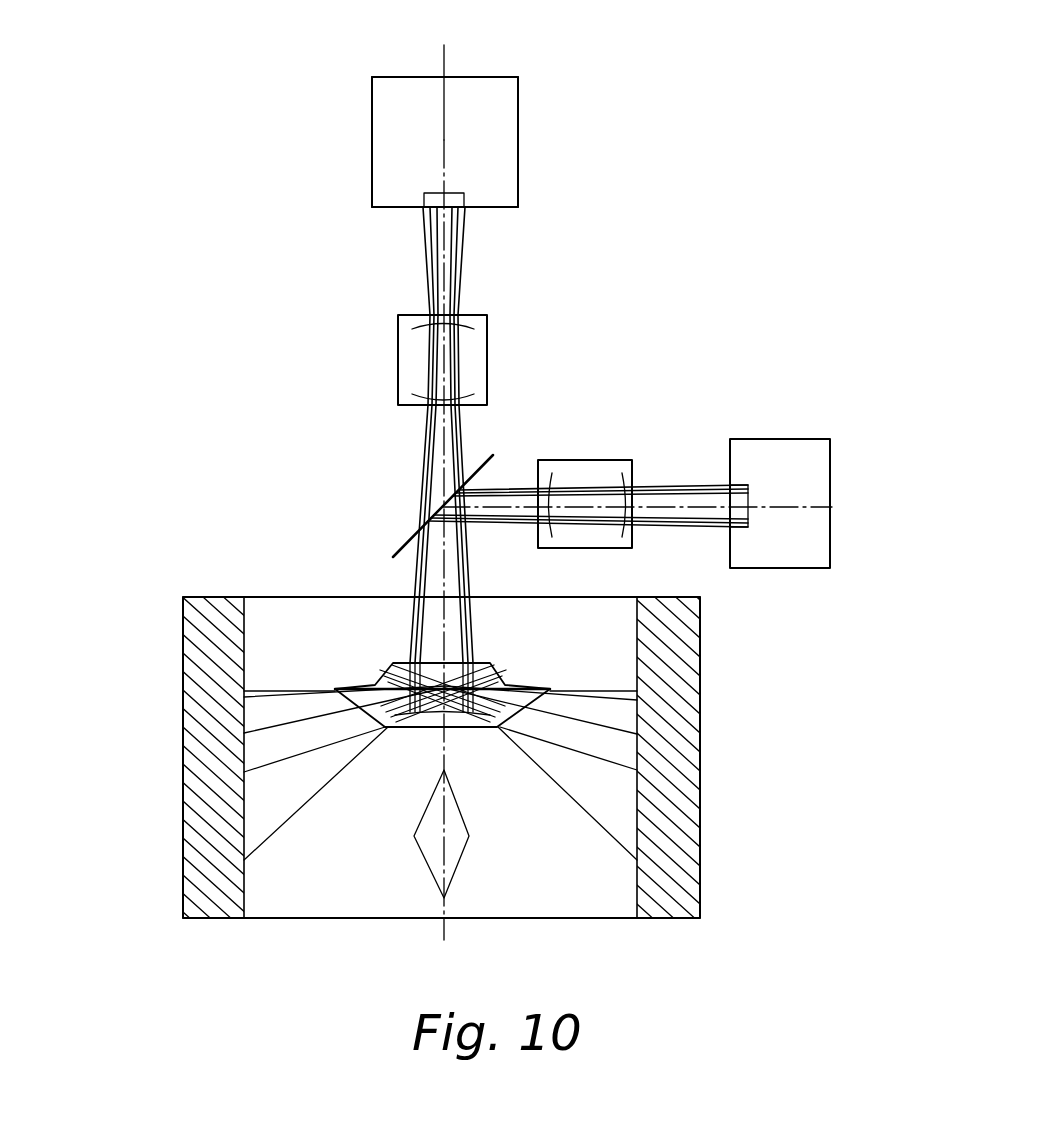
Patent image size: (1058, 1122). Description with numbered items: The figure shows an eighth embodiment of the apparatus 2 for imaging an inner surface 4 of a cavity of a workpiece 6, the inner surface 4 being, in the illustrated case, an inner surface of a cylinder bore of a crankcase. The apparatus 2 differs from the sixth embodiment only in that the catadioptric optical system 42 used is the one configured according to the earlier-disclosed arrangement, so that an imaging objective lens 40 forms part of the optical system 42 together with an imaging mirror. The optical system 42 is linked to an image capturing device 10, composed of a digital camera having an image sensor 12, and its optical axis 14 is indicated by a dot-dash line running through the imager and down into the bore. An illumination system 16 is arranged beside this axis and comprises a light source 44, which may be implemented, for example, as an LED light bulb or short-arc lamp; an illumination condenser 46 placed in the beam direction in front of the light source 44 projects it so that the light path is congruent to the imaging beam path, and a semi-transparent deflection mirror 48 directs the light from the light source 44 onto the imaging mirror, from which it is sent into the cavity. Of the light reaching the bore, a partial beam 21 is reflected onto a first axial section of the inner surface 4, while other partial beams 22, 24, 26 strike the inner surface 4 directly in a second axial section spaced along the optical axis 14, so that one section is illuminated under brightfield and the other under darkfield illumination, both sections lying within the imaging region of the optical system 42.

The apparatus 2 is at (664, 176).
The inner surface 4 is at (642, 620).
The workpiece 6 is at (680, 601).
The image capturing device 10 is at (398, 117).
The image sensor 12 is at (444, 194).
The optical axis 14 is at (444, 57).
The illumination system 16 is at (875, 403).
The partial beam 21 is at (244, 697).
The partial beam 22 is at (244, 733).
The partial beam 24 is at (244, 772).
The partial beam 26 is at (244, 860).
The imaging objective lens 40 is at (398, 350).
The catadioptric optical system 42 is at (400, 662).
The light source 44 is at (760, 475).
The detector lens 46 is at (577, 475).
The semi-transparent deflection mirror 48 is at (410, 538).